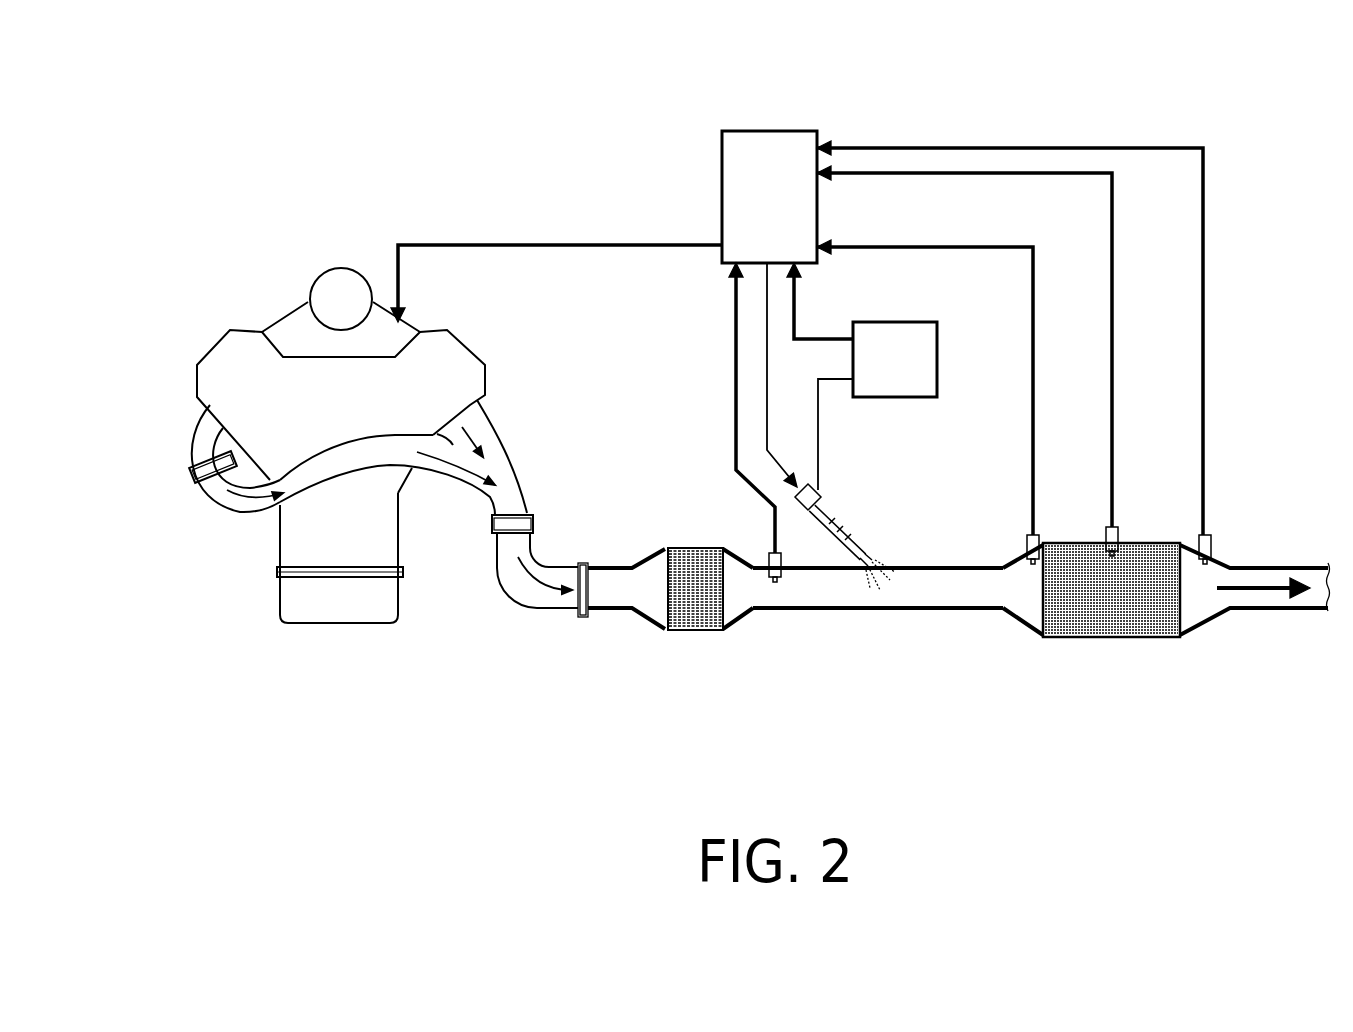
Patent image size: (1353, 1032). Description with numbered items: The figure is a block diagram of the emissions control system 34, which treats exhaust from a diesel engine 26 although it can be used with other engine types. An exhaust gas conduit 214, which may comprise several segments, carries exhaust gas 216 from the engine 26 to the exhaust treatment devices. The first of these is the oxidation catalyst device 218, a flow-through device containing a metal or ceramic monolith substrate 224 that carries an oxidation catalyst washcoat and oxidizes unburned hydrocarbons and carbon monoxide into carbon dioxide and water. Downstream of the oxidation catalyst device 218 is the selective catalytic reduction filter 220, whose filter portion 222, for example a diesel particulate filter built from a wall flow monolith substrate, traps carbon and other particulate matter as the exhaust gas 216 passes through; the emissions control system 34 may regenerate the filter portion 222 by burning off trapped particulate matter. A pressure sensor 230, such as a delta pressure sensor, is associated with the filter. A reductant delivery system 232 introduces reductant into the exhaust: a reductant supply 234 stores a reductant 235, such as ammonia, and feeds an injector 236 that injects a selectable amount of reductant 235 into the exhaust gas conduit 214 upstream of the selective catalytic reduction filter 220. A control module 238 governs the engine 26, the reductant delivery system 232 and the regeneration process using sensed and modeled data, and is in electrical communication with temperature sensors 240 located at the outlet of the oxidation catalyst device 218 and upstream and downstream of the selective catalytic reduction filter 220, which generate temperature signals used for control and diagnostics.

The diesel engine 26 is at (290, 300).
The exhaust gas conduit 214 is at (502, 430).
The exhaust gas 216 is at (530, 588).
The oxidation catalyst device 218 is at (680, 632).
The monolith substrate 224 is at (690, 567).
The emissions control system 34 is at (807, 640).
The selective catalytic reduction filter 220 is at (1138, 640).
The filter portion 222 is at (1103, 605).
The temperature sensors 240 is at (767, 562).
The pressure sensor 230 is at (1120, 535).
The injector 236 is at (865, 553).
The reductant 235 is at (887, 587).
The reductant supply 234 is at (938, 360).
The control module 238 is at (718, 198).
The reductant delivery system 232 is at (1093, 140).